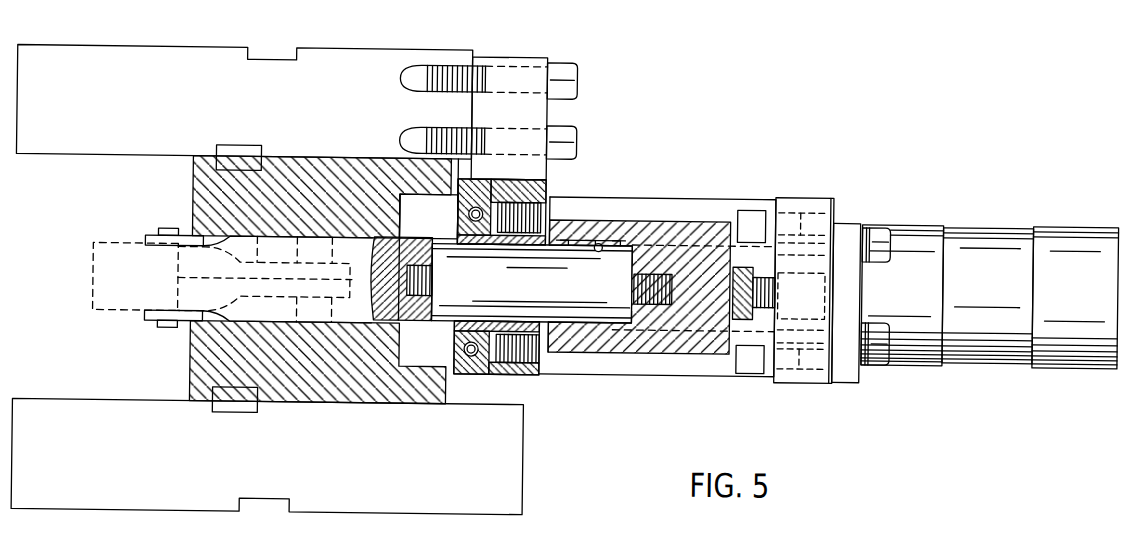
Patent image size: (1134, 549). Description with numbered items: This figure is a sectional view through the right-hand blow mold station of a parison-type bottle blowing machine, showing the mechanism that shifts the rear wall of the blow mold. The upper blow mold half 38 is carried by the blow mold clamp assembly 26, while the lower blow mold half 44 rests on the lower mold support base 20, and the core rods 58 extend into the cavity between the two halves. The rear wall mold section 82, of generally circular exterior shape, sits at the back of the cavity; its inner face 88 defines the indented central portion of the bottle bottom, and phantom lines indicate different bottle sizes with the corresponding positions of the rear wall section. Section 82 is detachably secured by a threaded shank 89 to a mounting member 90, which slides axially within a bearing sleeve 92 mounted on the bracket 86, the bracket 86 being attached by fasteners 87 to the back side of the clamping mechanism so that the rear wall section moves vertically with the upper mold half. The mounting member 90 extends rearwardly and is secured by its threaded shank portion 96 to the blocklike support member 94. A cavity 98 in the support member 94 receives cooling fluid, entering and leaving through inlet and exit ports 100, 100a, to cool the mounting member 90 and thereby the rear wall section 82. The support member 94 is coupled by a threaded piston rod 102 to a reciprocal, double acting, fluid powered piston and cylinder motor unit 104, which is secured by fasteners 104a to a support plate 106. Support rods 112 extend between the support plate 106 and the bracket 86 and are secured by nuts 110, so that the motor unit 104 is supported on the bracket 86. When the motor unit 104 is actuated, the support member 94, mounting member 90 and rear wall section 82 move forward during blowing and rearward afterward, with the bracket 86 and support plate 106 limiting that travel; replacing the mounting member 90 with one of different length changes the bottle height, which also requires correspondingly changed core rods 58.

The lower mold support base 20 is at (526, 469).
The blow mold clamp assembly 26 is at (264, 54).
The upper blow mold half 38 is at (210, 203).
The lower blow mold half 44 is at (207, 363).
The core rods 58 is at (258, 247).
The rear wall mold section 82 is at (413, 247).
The bracket 86 is at (548, 177).
The fasteners 87 is at (576, 87).
The inner face 88 is at (372, 301).
The threaded shank 89 is at (433, 282).
The mounting member 90 is at (613, 312).
The bearing sleeve 92 is at (532, 320).
The support member 94 is at (723, 220).
The threaded shank portion 96 is at (651, 306).
The cavity 98 is at (603, 240).
The inlet port 100 is at (479, 181).
The exit port 100a is at (475, 364).
The threaded piston rod 102 is at (763, 286).
The piston and cylinder motor unit 104 is at (986, 240).
The fasteners 104a is at (874, 224).
The support plate 106 is at (795, 196).
The nuts 110 is at (833, 383).
The support rods 112 is at (680, 201).